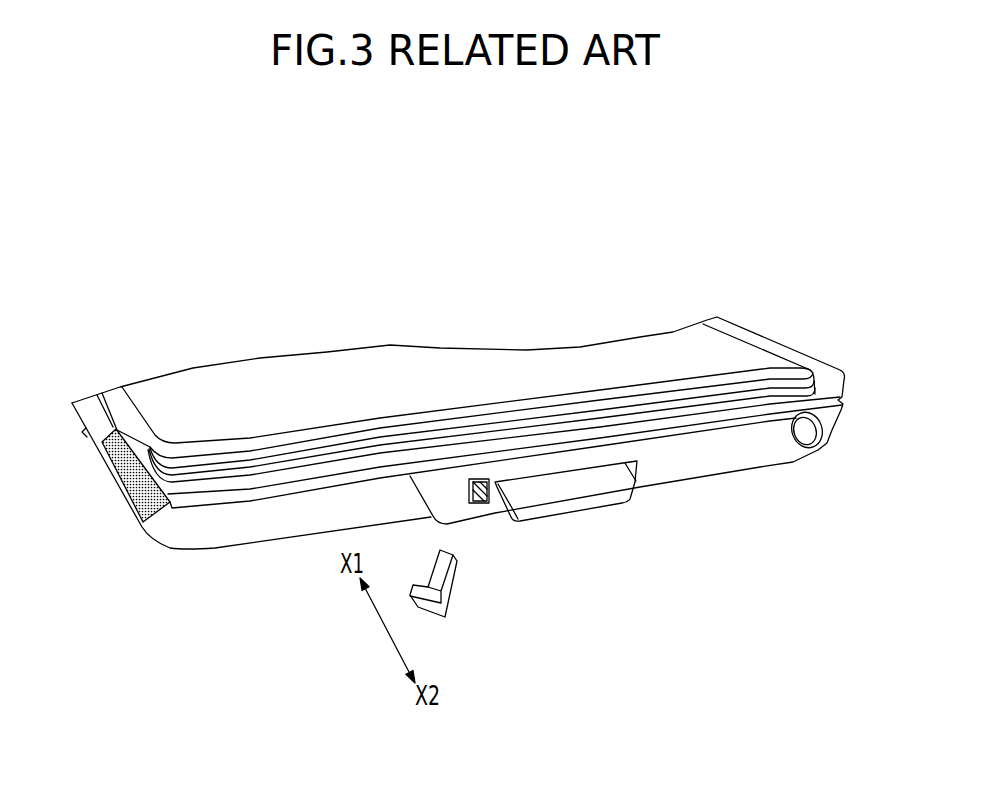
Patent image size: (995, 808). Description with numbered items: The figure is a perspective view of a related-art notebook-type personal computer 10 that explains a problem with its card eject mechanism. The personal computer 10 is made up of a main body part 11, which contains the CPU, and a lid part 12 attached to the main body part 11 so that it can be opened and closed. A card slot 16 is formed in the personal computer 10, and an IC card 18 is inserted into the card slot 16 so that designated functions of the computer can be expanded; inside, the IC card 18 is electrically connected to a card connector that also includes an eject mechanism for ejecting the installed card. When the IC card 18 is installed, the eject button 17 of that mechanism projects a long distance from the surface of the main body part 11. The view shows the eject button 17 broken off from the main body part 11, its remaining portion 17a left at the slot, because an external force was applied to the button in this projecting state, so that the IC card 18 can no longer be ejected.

The personal computer 10 is at (219, 236).
The main body part 11 is at (258, 537).
The lid part 12 is at (720, 348).
The card slot 16 is at (597, 465).
The eject button 17 is at (441, 583).
The clip engaging portion 17a is at (489, 503).
The IC card 18 is at (582, 490).